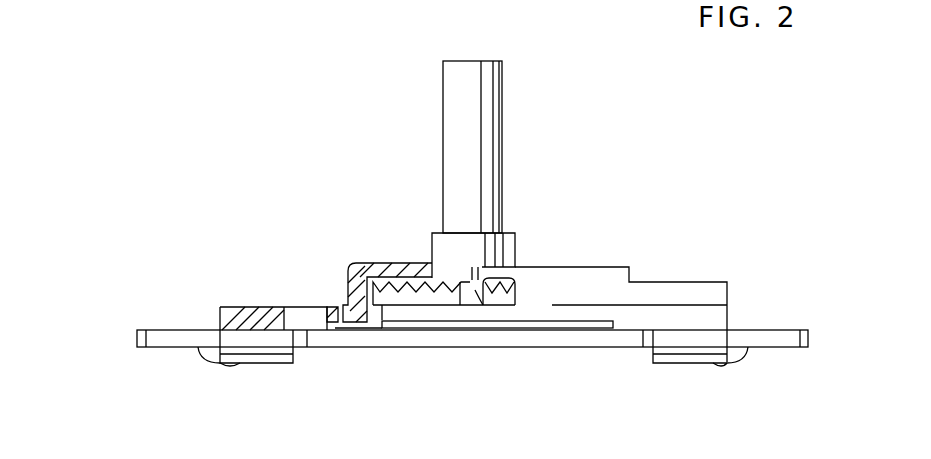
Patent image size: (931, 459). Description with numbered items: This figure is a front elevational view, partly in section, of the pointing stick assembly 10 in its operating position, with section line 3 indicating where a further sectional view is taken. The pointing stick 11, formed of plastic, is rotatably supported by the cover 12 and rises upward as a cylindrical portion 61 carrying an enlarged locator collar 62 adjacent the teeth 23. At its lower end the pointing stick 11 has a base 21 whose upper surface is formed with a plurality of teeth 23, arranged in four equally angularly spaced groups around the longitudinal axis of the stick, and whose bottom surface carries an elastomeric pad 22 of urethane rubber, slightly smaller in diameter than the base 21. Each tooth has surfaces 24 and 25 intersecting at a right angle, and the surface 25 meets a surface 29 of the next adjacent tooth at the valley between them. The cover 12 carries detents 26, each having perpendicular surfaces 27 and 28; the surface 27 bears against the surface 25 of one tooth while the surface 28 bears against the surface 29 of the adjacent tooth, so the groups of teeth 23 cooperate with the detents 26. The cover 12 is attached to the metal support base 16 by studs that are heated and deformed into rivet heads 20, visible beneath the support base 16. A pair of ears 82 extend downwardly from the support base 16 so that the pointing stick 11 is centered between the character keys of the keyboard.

The section line 3- 3 is at (193, 43).
The pointing stick assembly 10 is at (616, 122).
The pointing stick 11 is at (510, 156).
The cylindrical portion 61 is at (505, 105).
The locator collar 62 is at (436, 232).
The cover 12 is at (599, 262).
The base 21 is at (517, 293).
The surface 29 is at (470, 290).
The surface 25 is at (447, 280).
The surface 24 is at (455, 285).
The teeth 23 is at (462, 290).
The elastomeric pad 22 is at (368, 320).
The surface 27 is at (470, 285).
The detent 26 is at (473, 282).
The surface 28 is at (480, 283).
The support base 16 is at (781, 329).
The ears 82 is at (270, 364).
The rivet heads 20 is at (210, 366).